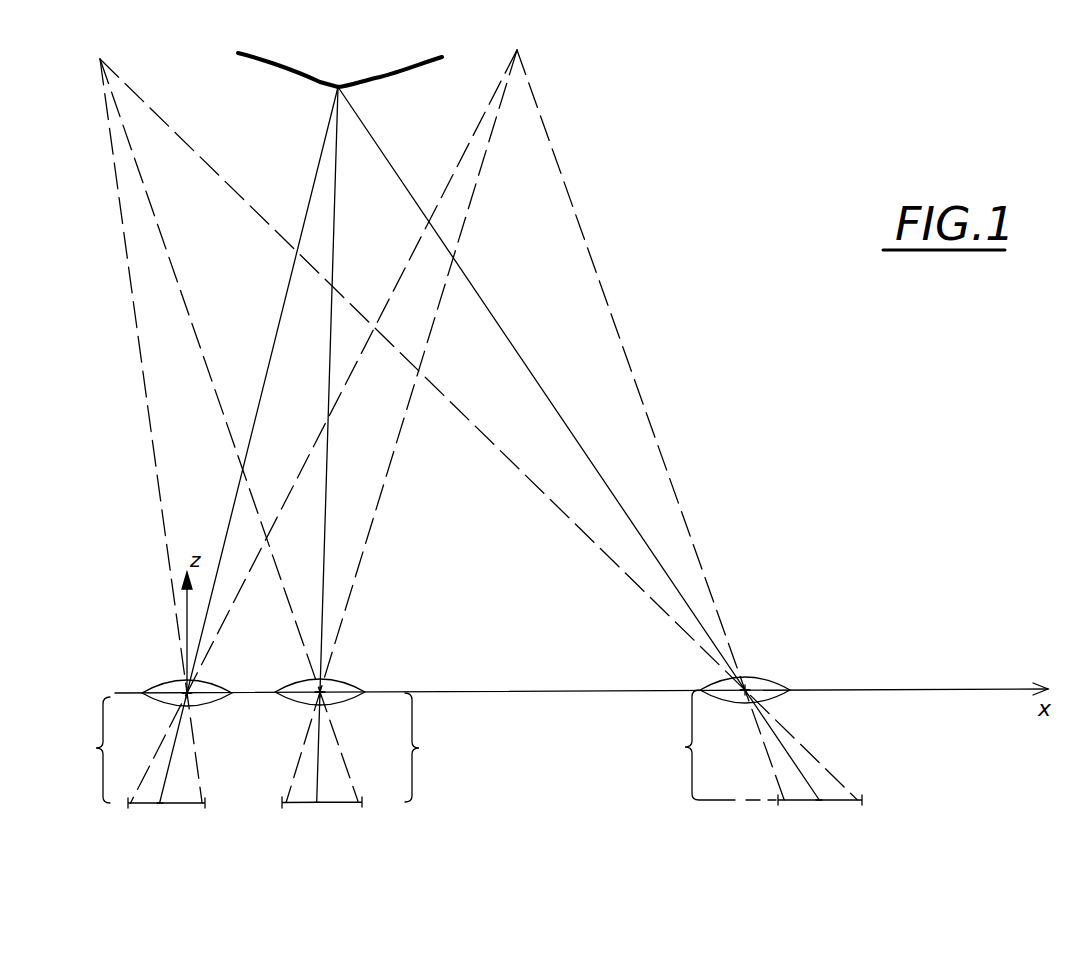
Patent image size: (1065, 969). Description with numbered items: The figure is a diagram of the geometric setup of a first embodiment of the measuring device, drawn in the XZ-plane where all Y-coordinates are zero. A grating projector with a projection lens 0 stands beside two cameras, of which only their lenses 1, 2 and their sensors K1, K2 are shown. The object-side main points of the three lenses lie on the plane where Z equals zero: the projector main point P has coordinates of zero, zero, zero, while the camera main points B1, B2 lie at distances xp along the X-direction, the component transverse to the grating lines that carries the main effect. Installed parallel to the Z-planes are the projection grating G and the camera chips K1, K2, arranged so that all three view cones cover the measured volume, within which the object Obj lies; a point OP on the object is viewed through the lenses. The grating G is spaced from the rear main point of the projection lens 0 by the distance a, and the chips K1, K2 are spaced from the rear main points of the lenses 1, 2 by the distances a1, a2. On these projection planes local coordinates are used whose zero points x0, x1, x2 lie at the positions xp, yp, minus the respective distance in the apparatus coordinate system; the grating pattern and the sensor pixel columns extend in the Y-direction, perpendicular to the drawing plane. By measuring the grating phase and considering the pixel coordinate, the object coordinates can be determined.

The projection lens 0 is at (148, 689).
The first camera lens 1 is at (347, 698).
The second camera lens 2 is at (778, 688).
The object Obj is at (420, 68).
The object point OP is at (257, 60).
The projector main point P is at (176, 691).
The first camera main point B1 is at (424, 661).
The second camera main point B2 is at (831, 659).
The projection grating G is at (203, 801).
The first camera sensor K1 is at (282, 801).
The second camera sensor K2 is at (861, 799).
The local coordinate origin of projection grating plane x0 is at (160, 805).
The local coordinate origin of first camera plane x1 is at (320, 805).
The local coordinate origin of second camera plane x2 is at (819, 802).
The projection grating distance a is at (82, 750).
The first sensor distance a1 is at (433, 747).
The second sensor distance a2 is at (710, 745).